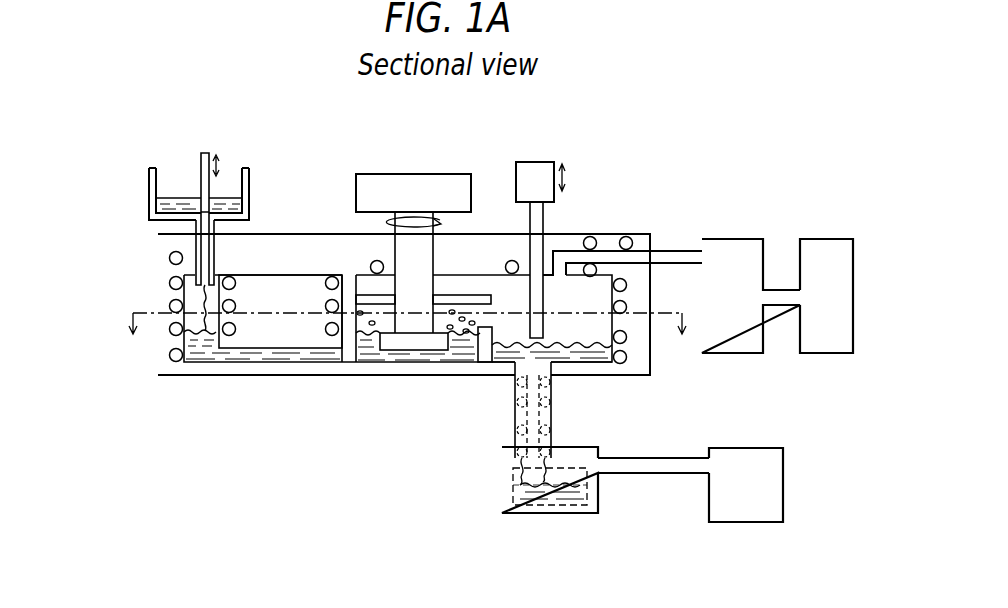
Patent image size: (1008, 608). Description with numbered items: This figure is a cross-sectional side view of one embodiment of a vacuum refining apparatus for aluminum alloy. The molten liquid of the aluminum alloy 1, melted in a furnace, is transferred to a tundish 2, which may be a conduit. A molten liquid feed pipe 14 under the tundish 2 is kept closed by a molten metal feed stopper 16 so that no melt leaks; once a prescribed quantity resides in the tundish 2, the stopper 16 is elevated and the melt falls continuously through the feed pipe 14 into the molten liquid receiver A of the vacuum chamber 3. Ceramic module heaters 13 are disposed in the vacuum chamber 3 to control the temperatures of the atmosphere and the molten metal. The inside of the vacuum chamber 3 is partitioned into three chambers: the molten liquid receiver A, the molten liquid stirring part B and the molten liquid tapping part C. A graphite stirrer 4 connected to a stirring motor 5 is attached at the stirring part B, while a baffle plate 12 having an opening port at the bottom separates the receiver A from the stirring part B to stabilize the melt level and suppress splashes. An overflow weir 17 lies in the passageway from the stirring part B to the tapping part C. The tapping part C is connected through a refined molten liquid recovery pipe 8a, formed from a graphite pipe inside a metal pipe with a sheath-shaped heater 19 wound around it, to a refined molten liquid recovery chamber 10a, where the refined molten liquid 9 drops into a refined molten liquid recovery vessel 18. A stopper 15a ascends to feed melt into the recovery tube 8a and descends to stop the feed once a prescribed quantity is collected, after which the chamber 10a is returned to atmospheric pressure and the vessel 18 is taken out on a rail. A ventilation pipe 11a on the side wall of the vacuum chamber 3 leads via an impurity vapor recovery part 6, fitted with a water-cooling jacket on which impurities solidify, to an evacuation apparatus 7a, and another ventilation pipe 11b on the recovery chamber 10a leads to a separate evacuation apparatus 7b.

The molten liquid of the aluminum alloy 1 is at (160, 207).
The tundish 2 is at (250, 188).
The vacuum chamber 3 is at (285, 368).
The stirrer 4 is at (407, 343).
The stirring motor 5 is at (383, 180).
The impurity vapor recovery part 6 is at (735, 239).
The evacuation apparatus 7a is at (826, 239).
The evacuation apparatus 7b is at (740, 448).
The refined molten liquid recovery pipe 8a is at (551, 398).
The refined molten liquid 9 is at (503, 355).
The refined molten liquid recovery chamber 10a is at (542, 513).
The ventilation pipe 11a is at (664, 248).
The ventilation pipe 11b is at (635, 458).
The baffle plate 12 is at (350, 345).
The heater 13 is at (177, 362).
The molten liquid feed pipe 14 is at (198, 243).
The stopper 15a is at (537, 223).
The molten metal feed stopper 16 is at (207, 160).
The overflow weir 17 is at (485, 348).
The refined molten liquid recovery vessel 18 is at (587, 497).
The sheath-shaped heater 19 is at (551, 432).
The molten liquid receiver A is at (195, 298).
The molten liquid stirring part B is at (443, 322).
The molten liquid tapping part C is at (593, 327).